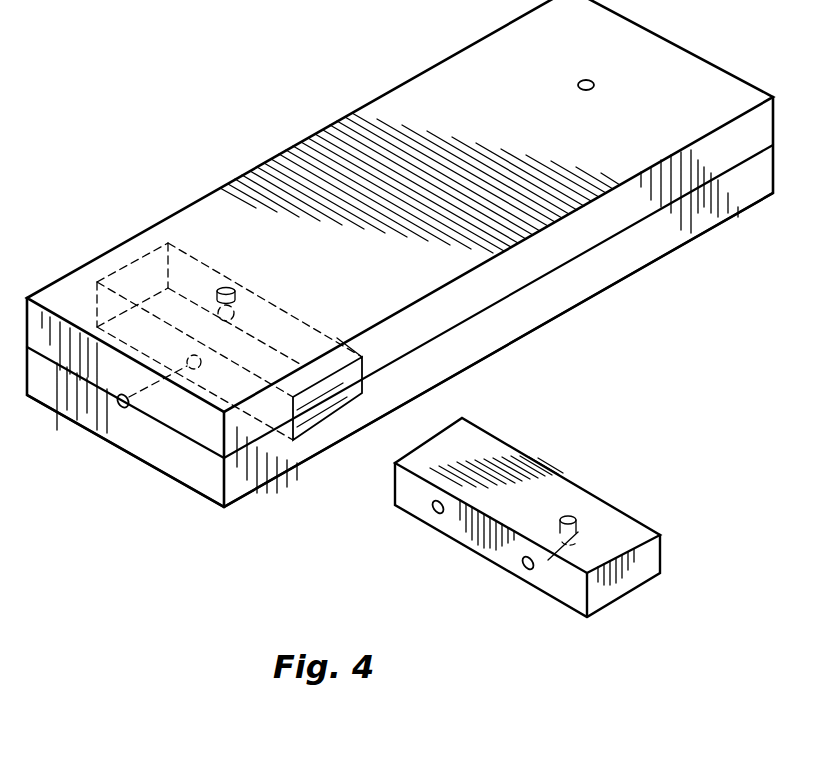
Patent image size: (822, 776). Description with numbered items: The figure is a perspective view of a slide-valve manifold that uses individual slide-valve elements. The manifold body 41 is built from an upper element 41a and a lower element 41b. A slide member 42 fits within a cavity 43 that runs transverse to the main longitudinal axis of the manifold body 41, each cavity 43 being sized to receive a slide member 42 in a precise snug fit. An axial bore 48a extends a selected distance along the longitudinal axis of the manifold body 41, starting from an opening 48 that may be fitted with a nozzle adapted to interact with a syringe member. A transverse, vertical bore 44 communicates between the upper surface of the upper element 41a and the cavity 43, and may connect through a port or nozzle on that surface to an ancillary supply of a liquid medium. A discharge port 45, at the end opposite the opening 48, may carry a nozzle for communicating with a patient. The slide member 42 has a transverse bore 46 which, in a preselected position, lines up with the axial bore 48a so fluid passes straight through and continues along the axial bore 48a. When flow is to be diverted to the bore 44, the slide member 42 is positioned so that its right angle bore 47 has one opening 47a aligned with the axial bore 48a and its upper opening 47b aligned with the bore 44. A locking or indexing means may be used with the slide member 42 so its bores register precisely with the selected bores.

The manifold body 41 is at (317, 133).
The upper element 41a is at (400, 301).
The lower element 41b is at (400, 350).
The slide member 42 is at (643, 520).
The cavity 43 is at (322, 420).
The transverse bore 44 is at (221, 288).
The discharge port 45 is at (578, 82).
The transverse bore 46 is at (447, 513).
The right angle bore 47 is at (527, 572).
The opening 47a is at (547, 566).
The upper opening 47b is at (572, 514).
The opening 48 is at (124, 408).
The axial bore 48a is at (147, 397).